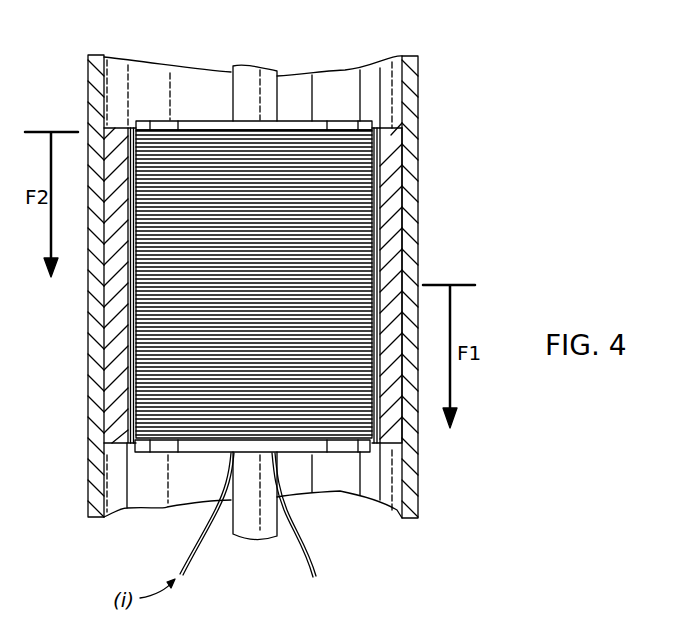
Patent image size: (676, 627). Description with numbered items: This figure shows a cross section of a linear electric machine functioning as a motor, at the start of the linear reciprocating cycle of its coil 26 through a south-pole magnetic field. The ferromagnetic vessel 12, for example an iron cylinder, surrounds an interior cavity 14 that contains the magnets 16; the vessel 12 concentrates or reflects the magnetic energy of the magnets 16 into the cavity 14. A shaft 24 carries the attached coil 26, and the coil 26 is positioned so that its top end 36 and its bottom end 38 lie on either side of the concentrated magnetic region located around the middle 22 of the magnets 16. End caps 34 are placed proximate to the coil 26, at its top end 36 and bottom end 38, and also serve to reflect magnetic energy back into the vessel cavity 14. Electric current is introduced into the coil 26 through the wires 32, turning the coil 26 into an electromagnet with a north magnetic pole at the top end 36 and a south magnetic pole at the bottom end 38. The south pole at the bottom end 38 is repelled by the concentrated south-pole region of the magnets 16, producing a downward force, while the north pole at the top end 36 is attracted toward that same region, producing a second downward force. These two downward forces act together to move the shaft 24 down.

The ferromagnetic vessel 12 is at (413, 114).
The interior cavity 14 is at (150, 72).
The magnets 16 is at (390, 153).
The middle of the magnets 22 is at (387, 277).
The shaft 24 is at (252, 86).
The coil 26 is at (363, 433).
The wires 32 is at (318, 563).
The end caps 34 is at (313, 122).
The top end of the coil 36 is at (240, 136).
The bottom end of the coil 38 is at (163, 440).